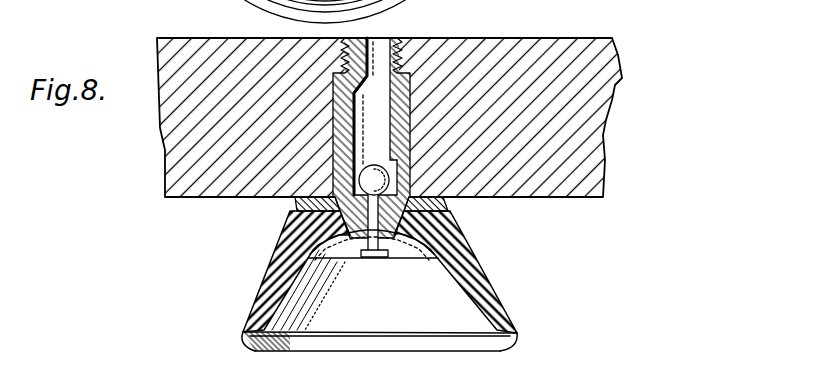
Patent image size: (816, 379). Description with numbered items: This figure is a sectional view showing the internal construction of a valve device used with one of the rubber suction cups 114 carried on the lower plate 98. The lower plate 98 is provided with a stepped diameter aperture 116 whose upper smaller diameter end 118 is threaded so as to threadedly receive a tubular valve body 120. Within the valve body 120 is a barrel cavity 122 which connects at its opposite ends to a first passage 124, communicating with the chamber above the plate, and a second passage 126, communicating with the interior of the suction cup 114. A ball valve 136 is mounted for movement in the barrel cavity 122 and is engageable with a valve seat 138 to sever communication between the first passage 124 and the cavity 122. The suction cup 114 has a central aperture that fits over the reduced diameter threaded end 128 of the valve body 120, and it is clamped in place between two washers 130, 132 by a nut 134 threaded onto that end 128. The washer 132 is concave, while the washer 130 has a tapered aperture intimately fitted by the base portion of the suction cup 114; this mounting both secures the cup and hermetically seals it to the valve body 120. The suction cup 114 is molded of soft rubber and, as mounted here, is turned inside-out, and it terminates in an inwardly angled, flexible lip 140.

The lower plate 98 is at (560, 38).
The rubber suction cup 114 is at (480, 265).
The stepped diameter aperture 116 is at (405, 130).
The upper smaller diameter end 118 is at (394, 50).
The tubular valve body 120 is at (404, 106).
The barrel cavity 122 is at (388, 153).
The first passage 124 is at (372, 44).
The second passage 126 is at (383, 258).
The reduced diameter threaded end 128 is at (360, 256).
The washer 130 is at (452, 205).
The concave washer 132 is at (421, 250).
The nut 134 is at (335, 252).
The ball valve 136 is at (389, 178).
The valve seat 138 is at (352, 102).
The flexible lip 140 is at (503, 343).